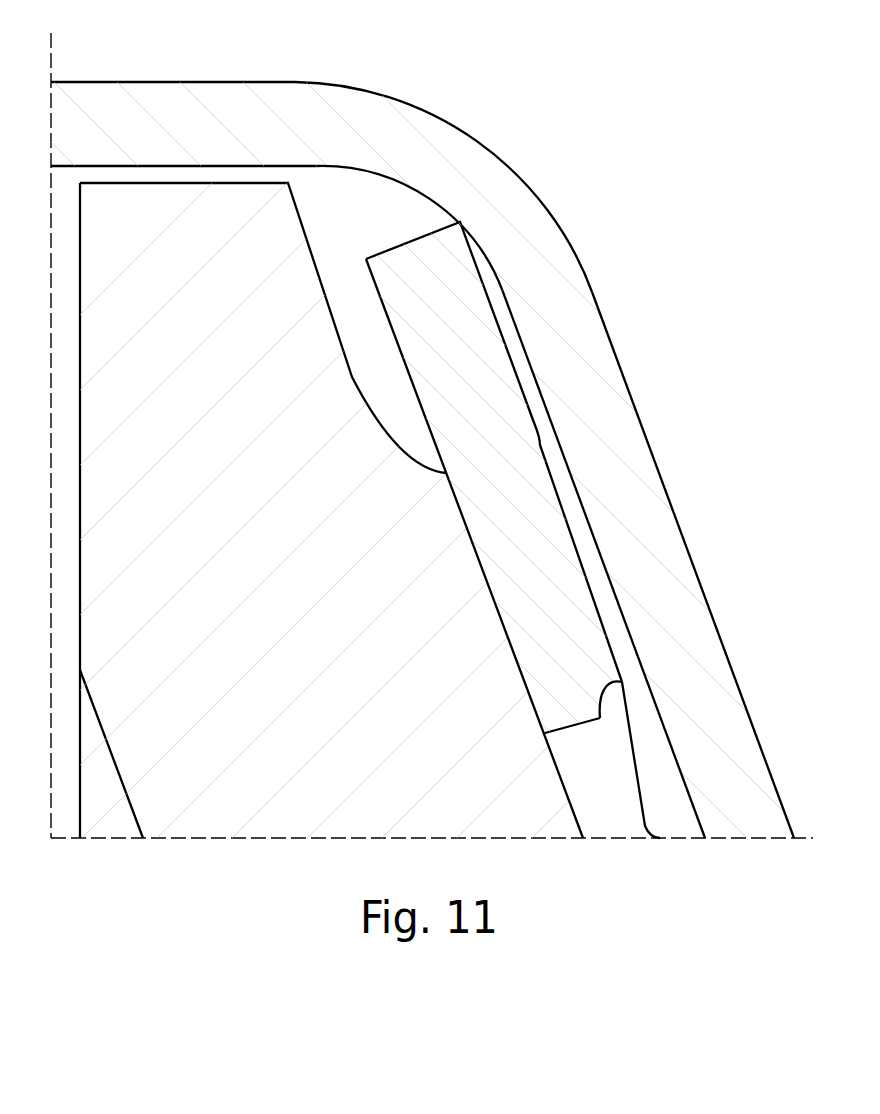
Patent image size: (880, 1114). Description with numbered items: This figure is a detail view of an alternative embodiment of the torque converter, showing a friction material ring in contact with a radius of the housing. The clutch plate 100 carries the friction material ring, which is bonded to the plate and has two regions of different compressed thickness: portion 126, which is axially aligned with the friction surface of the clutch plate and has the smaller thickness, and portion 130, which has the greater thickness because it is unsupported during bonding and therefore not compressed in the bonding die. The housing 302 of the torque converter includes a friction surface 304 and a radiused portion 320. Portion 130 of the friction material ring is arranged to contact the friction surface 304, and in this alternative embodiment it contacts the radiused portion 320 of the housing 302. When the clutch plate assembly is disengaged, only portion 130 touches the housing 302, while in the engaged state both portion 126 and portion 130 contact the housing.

The clutch plate 100 is at (259, 582).
The portion of friction material ring 126 is at (570, 633).
The portion of friction material ring 130 is at (447, 303).
The housing 302 is at (368, 115).
The friction surface 304 is at (567, 457).
The radiused portion 320 is at (443, 205).